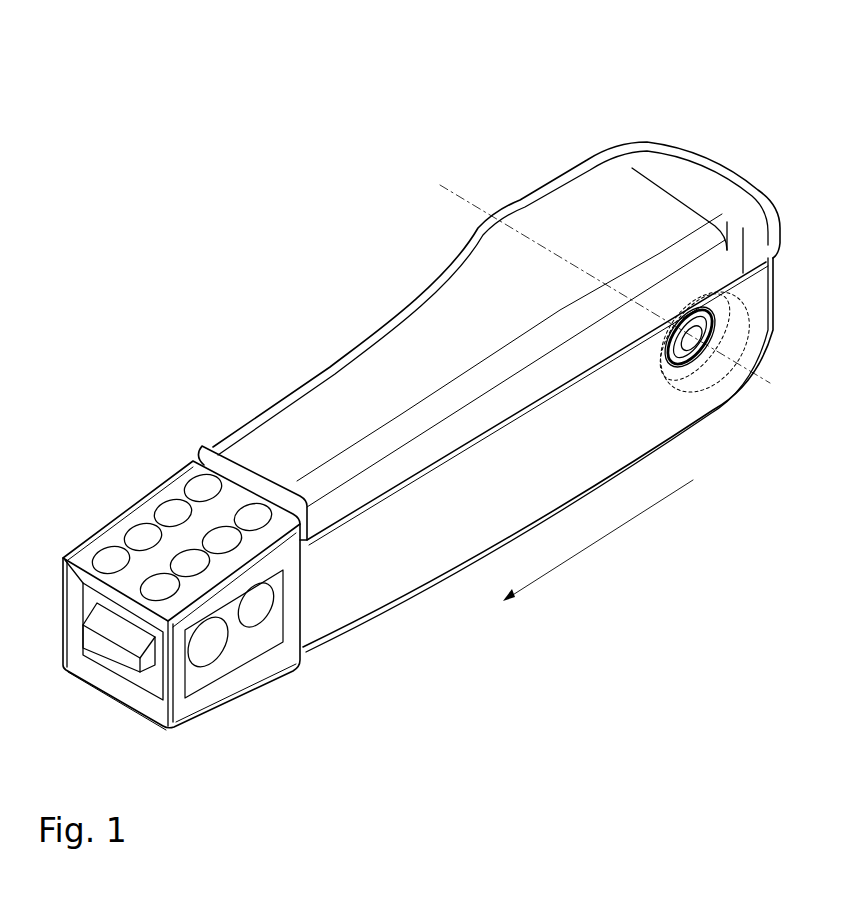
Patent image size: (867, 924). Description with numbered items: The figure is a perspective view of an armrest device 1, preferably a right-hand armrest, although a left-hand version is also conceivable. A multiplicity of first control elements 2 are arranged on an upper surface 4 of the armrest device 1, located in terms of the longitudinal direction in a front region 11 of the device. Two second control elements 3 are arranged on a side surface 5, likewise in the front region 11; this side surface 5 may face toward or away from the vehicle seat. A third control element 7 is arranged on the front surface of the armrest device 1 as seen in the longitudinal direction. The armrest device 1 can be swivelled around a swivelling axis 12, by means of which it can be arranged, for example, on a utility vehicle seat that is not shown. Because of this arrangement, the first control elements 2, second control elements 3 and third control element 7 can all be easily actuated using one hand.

The armrest device 1 is at (709, 92).
The first control element 2 is at (108, 557).
The second control element 3 is at (205, 657).
The upper surface 4 is at (178, 484).
The side surface 5 is at (277, 577).
The third control element 7 is at (108, 643).
The front region 11 is at (91, 421).
The swiveling axis 12 is at (697, 358).